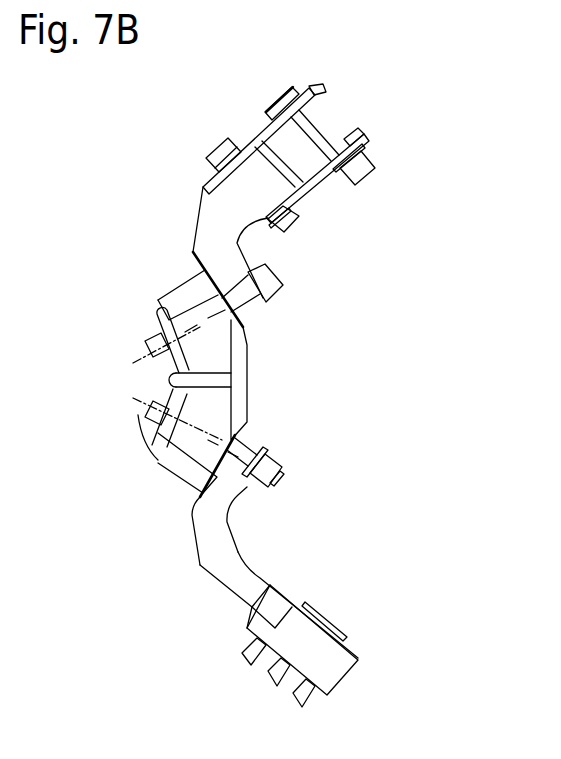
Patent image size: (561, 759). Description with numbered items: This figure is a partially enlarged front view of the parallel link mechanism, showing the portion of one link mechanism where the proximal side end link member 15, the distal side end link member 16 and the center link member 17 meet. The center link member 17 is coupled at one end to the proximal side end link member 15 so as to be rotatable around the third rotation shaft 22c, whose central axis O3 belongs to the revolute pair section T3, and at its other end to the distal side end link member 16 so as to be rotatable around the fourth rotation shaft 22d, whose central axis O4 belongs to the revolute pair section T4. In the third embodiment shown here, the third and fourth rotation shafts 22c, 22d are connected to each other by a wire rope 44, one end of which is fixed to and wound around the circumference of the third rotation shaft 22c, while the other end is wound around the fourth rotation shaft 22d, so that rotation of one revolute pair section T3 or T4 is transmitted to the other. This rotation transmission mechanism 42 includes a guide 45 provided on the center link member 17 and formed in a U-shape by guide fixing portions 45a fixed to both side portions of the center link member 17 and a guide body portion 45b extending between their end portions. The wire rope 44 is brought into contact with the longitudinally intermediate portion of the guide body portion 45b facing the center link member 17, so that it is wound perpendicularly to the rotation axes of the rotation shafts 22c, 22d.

The proximal side end link member 15 is at (240, 578).
The distal side end link member 16 is at (230, 200).
The center link member 17 is at (185, 462).
The third rotation shaft 22c is at (147, 417).
The fourth rotation shaft 22d is at (150, 341).
The rotation transmission mechanism 42 is at (152, 465).
The wire rope 44 is at (155, 457).
The guide 45 is at (383, 332).
The guide fixing portion 45a is at (222, 375).
The guide body portion 45b is at (183, 377).
The central axis O3 is at (290, 489).
The central axis O4 is at (292, 270).
The revolute pair section T3 is at (125, 391).
The revolute pair section T4 is at (128, 352).